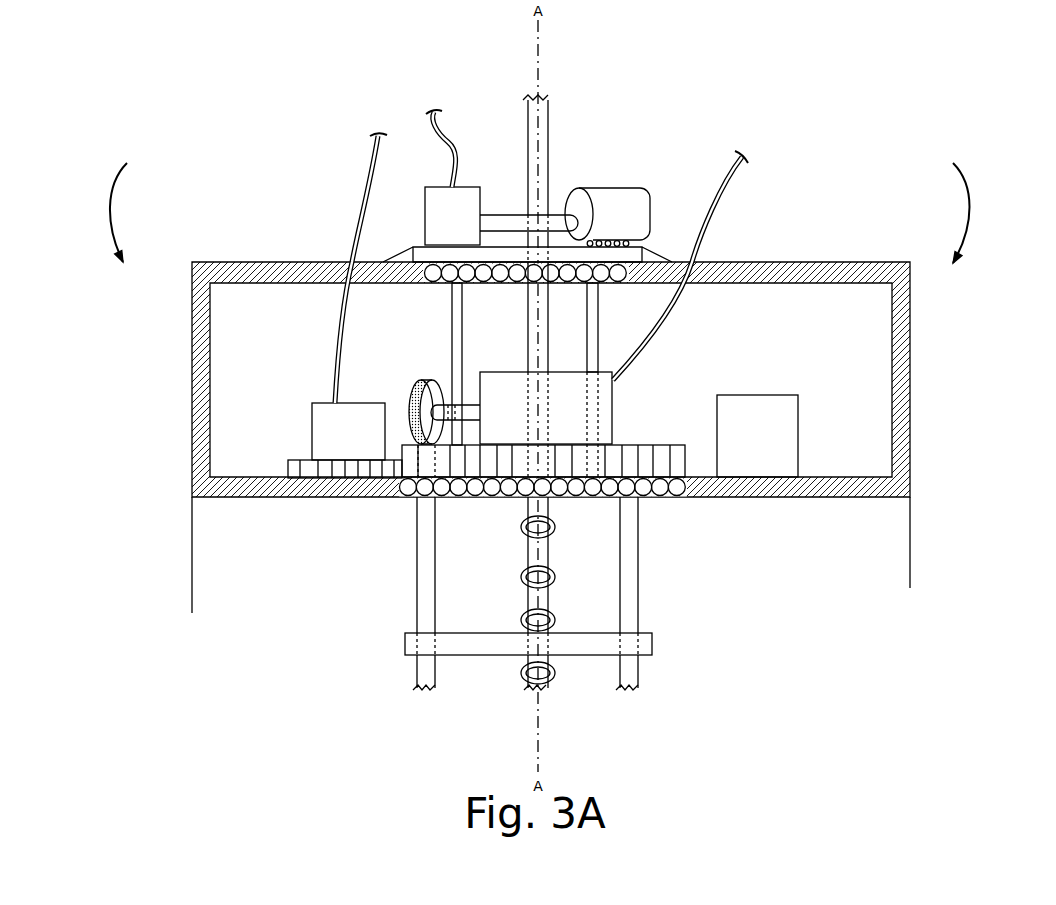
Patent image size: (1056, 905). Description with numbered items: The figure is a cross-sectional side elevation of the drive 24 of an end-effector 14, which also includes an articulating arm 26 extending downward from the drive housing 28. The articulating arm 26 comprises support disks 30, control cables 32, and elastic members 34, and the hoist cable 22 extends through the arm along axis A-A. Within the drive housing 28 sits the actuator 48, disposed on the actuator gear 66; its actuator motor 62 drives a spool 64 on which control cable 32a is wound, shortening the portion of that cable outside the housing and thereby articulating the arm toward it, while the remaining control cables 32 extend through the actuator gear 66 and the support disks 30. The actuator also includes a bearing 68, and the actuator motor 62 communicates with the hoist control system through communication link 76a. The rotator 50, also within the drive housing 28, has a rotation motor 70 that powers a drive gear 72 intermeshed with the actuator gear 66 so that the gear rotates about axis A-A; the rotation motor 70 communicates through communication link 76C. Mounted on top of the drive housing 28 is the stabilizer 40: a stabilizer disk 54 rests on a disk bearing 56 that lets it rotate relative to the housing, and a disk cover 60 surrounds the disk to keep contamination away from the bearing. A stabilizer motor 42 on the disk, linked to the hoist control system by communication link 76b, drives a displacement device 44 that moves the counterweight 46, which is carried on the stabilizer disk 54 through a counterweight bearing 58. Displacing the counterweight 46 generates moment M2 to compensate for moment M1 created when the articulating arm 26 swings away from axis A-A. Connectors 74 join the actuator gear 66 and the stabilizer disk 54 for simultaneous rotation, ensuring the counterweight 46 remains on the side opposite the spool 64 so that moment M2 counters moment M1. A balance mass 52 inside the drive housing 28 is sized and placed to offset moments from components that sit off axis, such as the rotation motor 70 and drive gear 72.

The end-effector 14 is at (265, 207).
The hoist cable 22 is at (547, 563).
The drive 24 is at (163, 305).
The articulating arm 26 is at (417, 593).
The drive housing 28 is at (203, 277).
The support disks 30 is at (652, 640).
The control cables 32 is at (640, 568).
The control cable 32a is at (427, 538).
The elastic members 34 is at (540, 523).
The stabilizer 40 is at (558, 190).
The stabilizer motor 42 is at (470, 202).
The displacement device 44 is at (517, 223).
The counterweight 46 is at (600, 215).
The actuator 48 is at (614, 400).
The rotator 50 is at (290, 402).
The balance mass 52 is at (753, 415).
The stabilizer disk 54 is at (658, 258).
The disk bearing 56 is at (683, 255).
The counterweight bearing 58 is at (635, 242).
The disk cover 60 is at (403, 252).
The actuator motor 62 is at (615, 385).
The spool 64 is at (413, 392).
The actuator gear 66 is at (607, 457).
The bearing 68 is at (680, 497).
The rotation motor 70 is at (328, 422).
The drive gear 72 is at (288, 470).
The connectors 74 is at (460, 300).
The communication link 76a is at (720, 207).
The communication link 76b is at (435, 105).
The communication link 76C is at (372, 163).
The moment M1 is at (110, 183).
The moment M2 is at (972, 198).